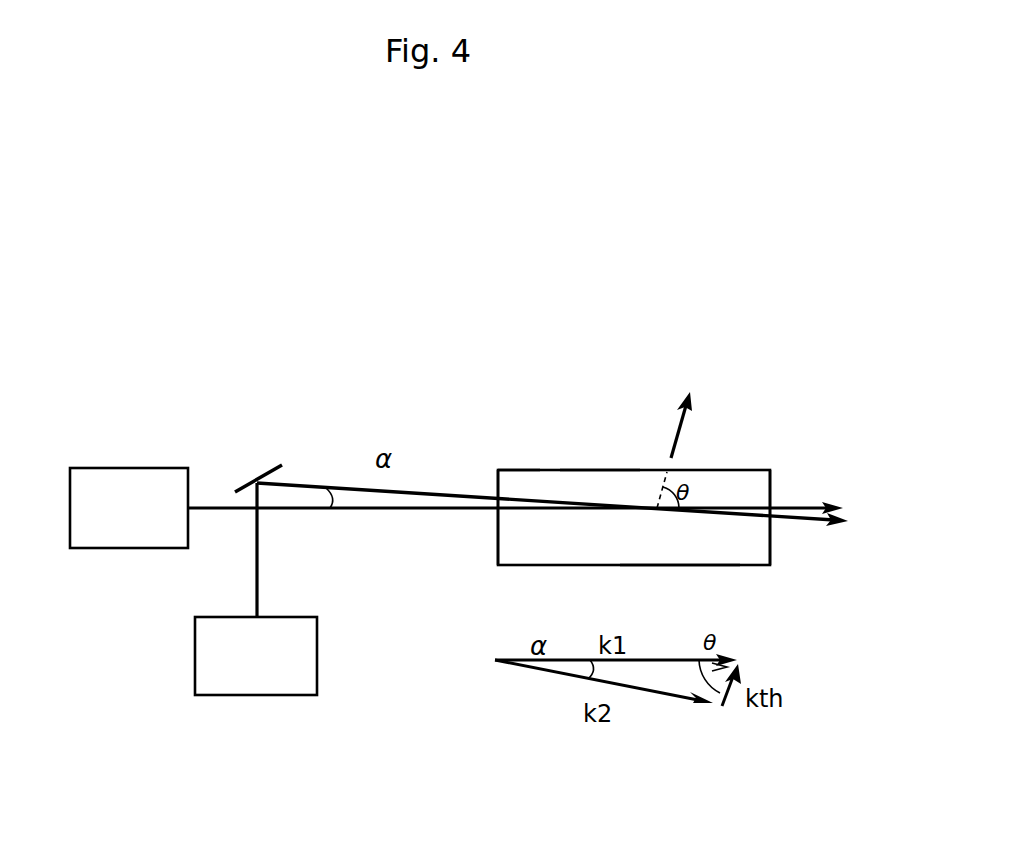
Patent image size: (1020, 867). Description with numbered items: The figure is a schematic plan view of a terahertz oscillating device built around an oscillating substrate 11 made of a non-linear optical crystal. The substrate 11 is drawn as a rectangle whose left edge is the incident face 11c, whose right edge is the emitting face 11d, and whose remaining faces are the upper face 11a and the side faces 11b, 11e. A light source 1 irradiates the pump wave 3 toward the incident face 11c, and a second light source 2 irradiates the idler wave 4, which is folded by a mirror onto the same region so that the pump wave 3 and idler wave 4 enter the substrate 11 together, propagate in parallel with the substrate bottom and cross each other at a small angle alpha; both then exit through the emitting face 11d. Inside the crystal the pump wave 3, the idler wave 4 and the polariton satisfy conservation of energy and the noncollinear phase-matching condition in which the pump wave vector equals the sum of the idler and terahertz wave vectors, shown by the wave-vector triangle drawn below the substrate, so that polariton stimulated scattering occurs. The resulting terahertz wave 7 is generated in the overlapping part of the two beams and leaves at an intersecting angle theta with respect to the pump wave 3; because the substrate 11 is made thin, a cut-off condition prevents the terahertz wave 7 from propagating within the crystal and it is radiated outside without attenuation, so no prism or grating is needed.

The light source 1 is at (137, 521).
The light source 2 is at (265, 669).
The pump wave 3 is at (391, 512).
The idler wave 4 is at (307, 483).
The terahertz wave 7 is at (672, 432).
The oscillating substrate 11 is at (756, 480).
The upper face 11a is at (595, 482).
The side face 11b is at (521, 470).
The incident face 11c is at (498, 488).
The emitting face 11d is at (772, 485).
The side face 11e is at (677, 565).